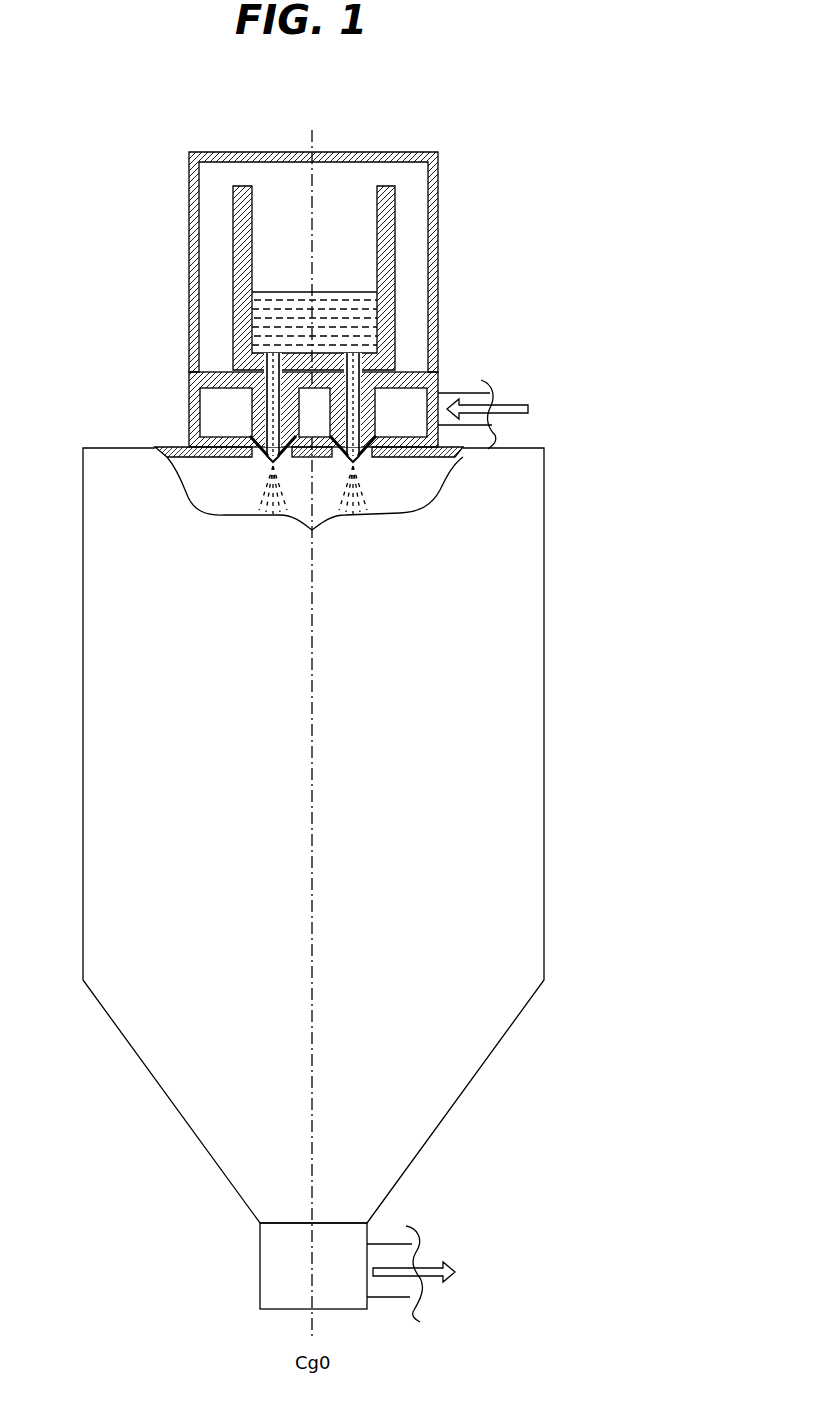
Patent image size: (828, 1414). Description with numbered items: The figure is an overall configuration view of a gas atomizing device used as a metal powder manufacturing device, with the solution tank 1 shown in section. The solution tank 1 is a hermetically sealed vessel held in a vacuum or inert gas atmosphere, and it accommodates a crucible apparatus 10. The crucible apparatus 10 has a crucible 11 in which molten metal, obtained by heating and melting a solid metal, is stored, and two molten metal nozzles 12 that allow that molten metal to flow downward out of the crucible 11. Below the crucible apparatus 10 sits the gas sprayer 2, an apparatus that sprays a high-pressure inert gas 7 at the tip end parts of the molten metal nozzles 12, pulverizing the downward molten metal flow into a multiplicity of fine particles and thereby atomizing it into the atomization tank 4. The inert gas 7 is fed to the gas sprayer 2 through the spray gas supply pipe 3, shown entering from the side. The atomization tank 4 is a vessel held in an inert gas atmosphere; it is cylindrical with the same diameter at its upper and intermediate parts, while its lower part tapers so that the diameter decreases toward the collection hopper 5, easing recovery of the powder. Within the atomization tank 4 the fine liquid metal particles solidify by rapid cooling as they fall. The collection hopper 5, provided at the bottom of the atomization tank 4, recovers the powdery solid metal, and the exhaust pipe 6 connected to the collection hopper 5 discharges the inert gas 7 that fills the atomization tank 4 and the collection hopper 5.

The solution tank 1 is at (395, 150).
The crucible apparatus 10 is at (413, 201).
The crucible 11 is at (383, 265).
The molten metal nozzles 12 is at (272, 350).
The gas sprayer 2 is at (189, 385).
The spray gas supply pipe 3 is at (450, 393).
The atomization tank 4 is at (544, 752).
The collection hopper 5 is at (260, 1277).
The exhaust pipe 6 is at (393, 1297).
The inert gas 7 is at (463, 841).